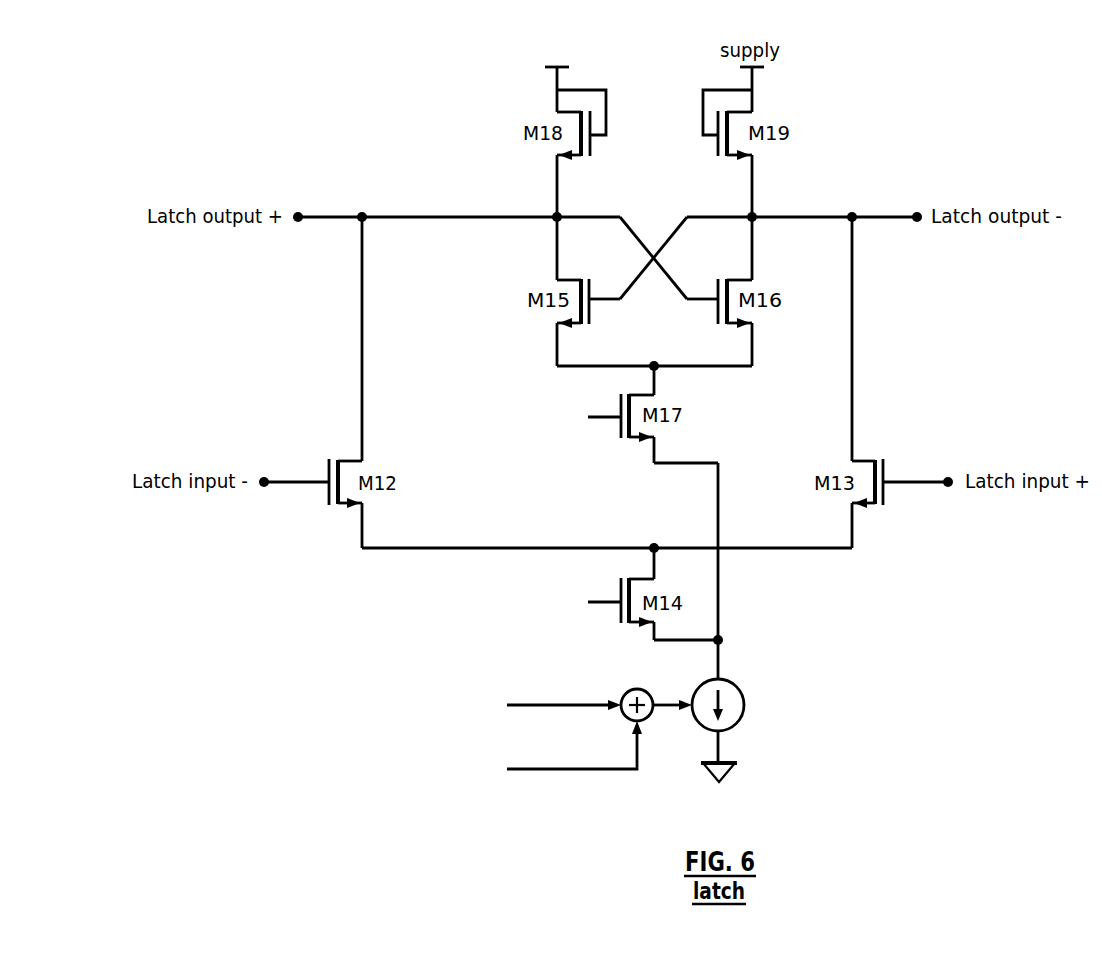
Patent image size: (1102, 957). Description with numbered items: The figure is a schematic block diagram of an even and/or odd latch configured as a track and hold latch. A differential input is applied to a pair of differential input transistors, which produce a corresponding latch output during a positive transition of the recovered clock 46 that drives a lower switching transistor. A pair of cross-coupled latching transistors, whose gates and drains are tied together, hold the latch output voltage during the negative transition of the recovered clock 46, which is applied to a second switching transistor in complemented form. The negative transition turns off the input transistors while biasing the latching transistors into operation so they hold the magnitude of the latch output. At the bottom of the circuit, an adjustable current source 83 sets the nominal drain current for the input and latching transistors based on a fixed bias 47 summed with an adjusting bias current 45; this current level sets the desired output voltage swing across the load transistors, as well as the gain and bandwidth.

The adjusting bias current 45 is at (441, 705).
The recovered clock 46 is at (572, 398).
The fixed bias 47 is at (511, 747).
The adjustable current source 83 is at (741, 687).